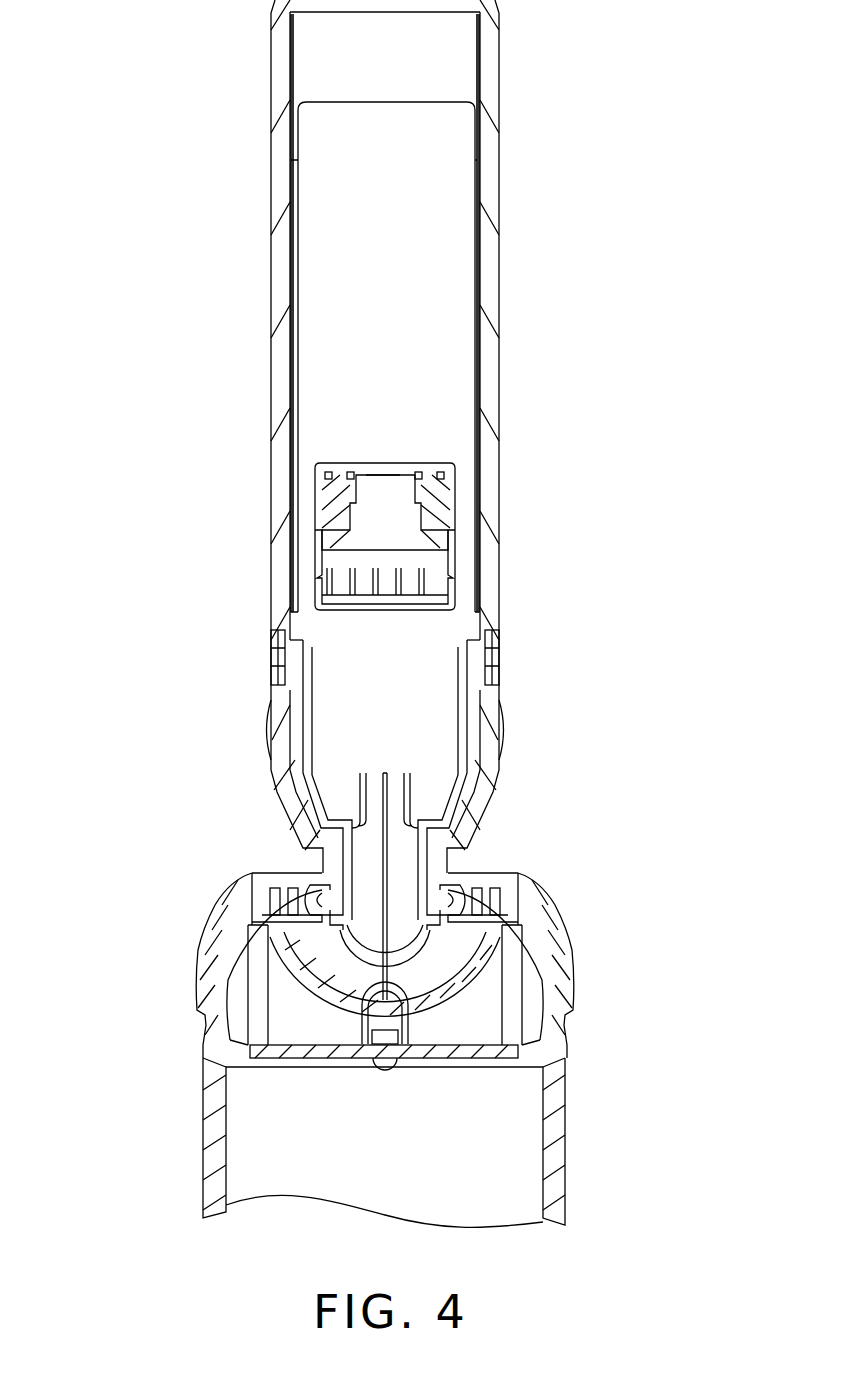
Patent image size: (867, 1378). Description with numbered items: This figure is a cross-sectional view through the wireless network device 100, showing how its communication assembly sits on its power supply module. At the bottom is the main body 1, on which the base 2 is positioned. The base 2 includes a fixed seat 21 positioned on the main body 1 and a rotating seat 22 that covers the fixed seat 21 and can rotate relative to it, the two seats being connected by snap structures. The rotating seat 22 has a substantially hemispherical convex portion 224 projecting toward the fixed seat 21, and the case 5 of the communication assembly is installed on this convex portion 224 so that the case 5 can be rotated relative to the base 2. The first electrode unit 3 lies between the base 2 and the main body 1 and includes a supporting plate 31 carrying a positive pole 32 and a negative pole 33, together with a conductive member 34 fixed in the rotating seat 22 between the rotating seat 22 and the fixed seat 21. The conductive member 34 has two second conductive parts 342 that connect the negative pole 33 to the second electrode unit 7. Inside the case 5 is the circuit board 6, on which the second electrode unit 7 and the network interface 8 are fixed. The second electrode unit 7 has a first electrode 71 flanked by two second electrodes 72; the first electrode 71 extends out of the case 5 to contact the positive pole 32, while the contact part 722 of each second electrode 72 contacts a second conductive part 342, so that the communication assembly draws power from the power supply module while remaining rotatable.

The wireless network device 100 is at (168, 57).
The main body 1 is at (215, 1157).
The base 2 is at (110, 873).
The fixed seat 21 is at (225, 977).
The rotating seat 22 is at (233, 915).
The convex portion 224 is at (322, 1000).
The first electrode unit 3 is at (668, 905).
The supporting plate 31 is at (480, 1052).
The positive pole 32 is at (388, 1000).
The negative pole 33 is at (513, 970).
The conductive member 34 is at (505, 912).
The second conductive part 342 is at (495, 898).
The case 5 is at (487, 573).
The circuit board 6 is at (453, 195).
The second electrode unit 7 is at (582, 727).
The first electrode 71 is at (408, 783).
The second electrode 72 is at (390, 772).
The contact part 722 is at (455, 882).
The network interface 8 is at (427, 541).